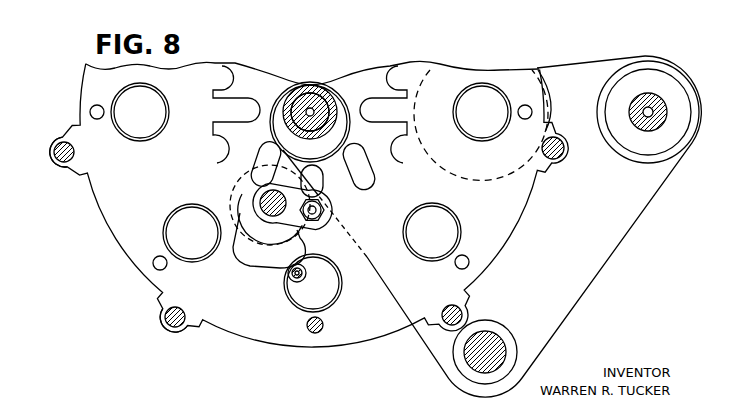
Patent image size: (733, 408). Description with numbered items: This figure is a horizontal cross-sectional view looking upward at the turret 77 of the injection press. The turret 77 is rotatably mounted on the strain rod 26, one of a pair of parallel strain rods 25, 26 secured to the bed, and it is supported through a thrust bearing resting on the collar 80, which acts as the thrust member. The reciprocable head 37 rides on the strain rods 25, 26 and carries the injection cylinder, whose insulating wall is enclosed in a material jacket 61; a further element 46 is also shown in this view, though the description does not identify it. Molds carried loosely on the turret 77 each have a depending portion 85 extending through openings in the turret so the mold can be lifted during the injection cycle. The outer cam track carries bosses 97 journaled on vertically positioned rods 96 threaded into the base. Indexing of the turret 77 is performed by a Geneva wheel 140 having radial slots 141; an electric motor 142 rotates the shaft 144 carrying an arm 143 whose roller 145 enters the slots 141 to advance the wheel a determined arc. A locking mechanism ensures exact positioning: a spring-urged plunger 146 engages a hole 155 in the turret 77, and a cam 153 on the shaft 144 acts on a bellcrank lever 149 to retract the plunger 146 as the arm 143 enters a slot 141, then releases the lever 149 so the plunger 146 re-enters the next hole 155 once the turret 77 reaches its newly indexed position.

The strain rod 25 is at (645, 118).
The strain rod 26 is at (316, 100).
The reciprocable head 37 is at (573, 283).
The pulley 46 is at (674, 153).
The material jacket 61 is at (547, 93).
The turret 77 is at (100, 203).
The collar 80 is at (303, 94).
The depending portion 85 is at (445, 222).
The vertically positioned rods 96 is at (68, 165).
The bosses 97 is at (54, 157).
The Geneva wheel 140 is at (387, 164).
The radial slots 141 is at (370, 178).
The electric motor 142 is at (245, 205).
The arm 143 is at (284, 190).
The shaft 144 is at (260, 192).
The roller 145 is at (328, 218).
The plunger 146 is at (315, 334).
The bellcrank lever 149 is at (290, 278).
The cam 153 is at (270, 248).
The hole 155 is at (91, 111).